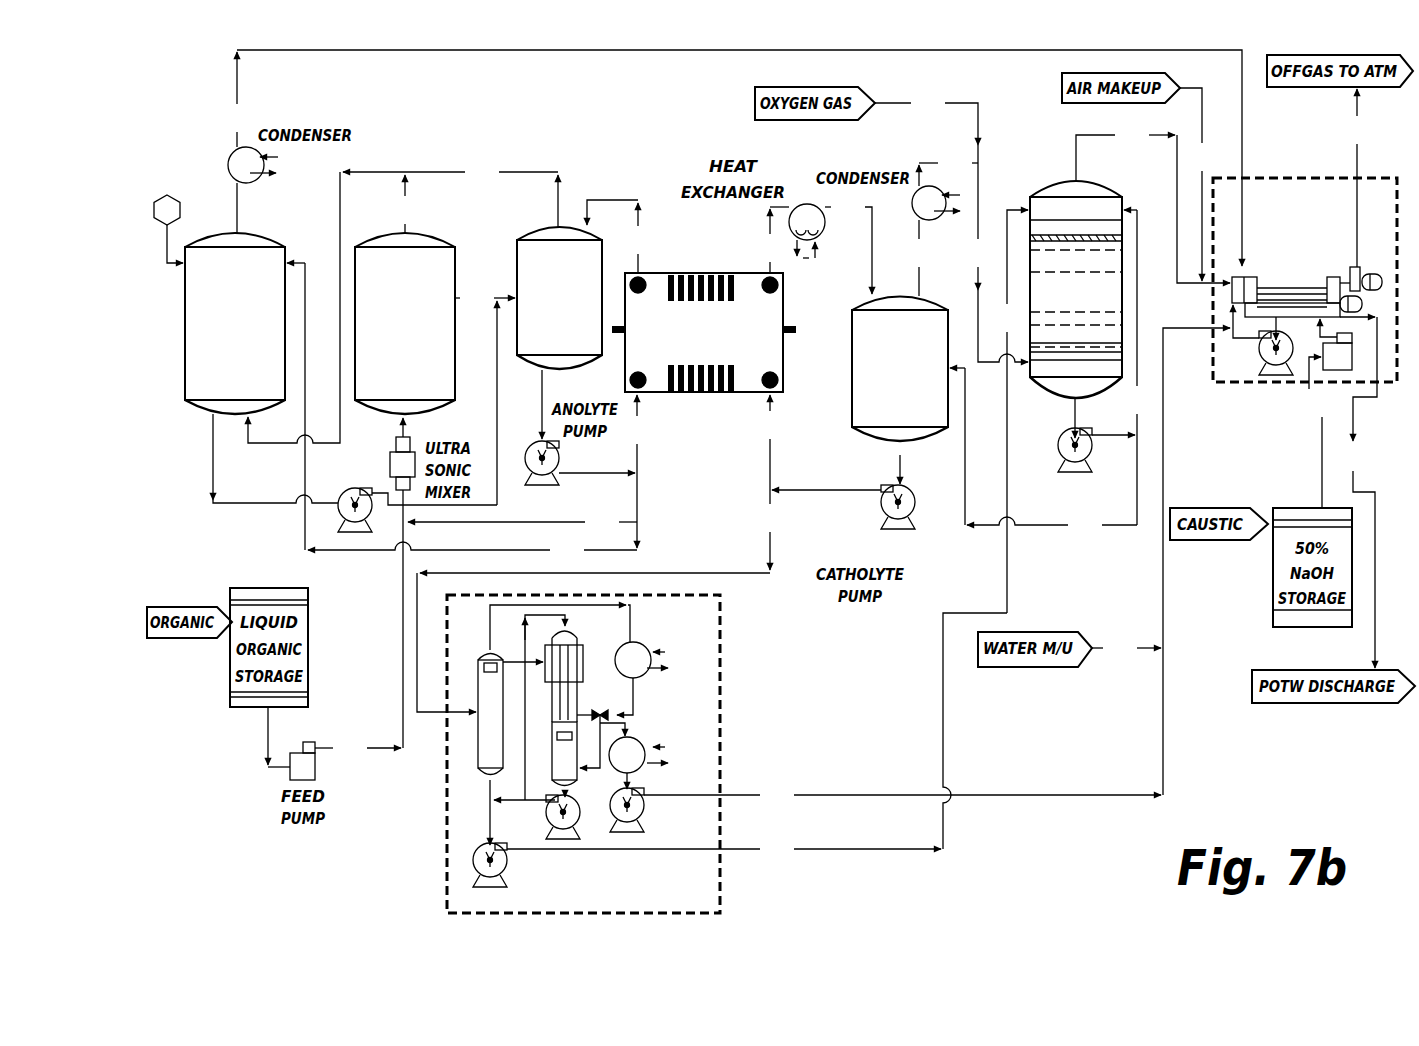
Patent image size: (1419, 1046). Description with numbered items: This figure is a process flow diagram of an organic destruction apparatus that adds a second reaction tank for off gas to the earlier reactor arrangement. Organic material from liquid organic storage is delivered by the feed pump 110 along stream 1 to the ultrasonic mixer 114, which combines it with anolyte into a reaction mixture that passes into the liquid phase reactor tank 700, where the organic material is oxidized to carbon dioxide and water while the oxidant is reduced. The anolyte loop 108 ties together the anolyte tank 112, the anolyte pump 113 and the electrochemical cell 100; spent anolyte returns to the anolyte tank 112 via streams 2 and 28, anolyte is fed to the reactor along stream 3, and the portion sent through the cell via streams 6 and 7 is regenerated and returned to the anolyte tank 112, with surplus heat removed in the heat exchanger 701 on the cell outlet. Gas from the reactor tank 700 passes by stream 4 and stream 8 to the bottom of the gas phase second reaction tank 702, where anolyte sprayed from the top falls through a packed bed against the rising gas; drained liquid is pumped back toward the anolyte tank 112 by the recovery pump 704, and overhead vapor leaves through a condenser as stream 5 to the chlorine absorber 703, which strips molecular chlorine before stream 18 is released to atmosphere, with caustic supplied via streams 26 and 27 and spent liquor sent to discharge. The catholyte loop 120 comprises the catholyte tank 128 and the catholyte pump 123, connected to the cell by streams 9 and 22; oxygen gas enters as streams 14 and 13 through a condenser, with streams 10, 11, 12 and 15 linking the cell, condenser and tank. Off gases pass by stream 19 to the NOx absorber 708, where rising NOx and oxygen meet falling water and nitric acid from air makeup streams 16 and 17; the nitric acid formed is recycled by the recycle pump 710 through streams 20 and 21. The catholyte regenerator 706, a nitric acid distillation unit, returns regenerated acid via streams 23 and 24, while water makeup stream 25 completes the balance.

The electrochemical cell 100 is at (688, 406).
The anolyte loop 108 is at (620, 184).
The feed pump 110 is at (318, 780).
The anolyte tank 112 is at (544, 340).
The anolyte pump 113 is at (541, 486).
The ultrasonic mixer 114 is at (388, 458).
The catholyte loop 120 is at (814, 194).
The catholyte pump 123 is at (890, 530).
The catholyte tank 128 is at (884, 411).
The reactor tank 700 is at (424, 388).
The heat exchanger 701 is at (815, 263).
The second reaction tank 702 is at (254, 388).
The chlorine absorber 703 is at (1298, 176).
The recovery pump 704 is at (346, 491).
The catholyte regenerator 706 is at (724, 660).
The NOx absorber 708 is at (1052, 398).
The recycle pump 710 is at (1064, 473).
The stream 1 is at (358, 748).
The stream 2 is at (522, 522).
The stream 3 is at (485, 298).
The stream 4 is at (405, 204).
The stream 5 is at (237, 125).
The stream 6 is at (637, 471).
The stream 7 is at (638, 238).
The stream 8 is at (511, 172).
The stream 9 is at (770, 449).
The stream 10 is at (770, 241).
The stream 11 is at (848, 243).
The stream 12 is at (919, 258).
The stream 13 is at (948, 163).
The stream 14 is at (926, 117).
The stream 15 is at (994, 253).
The stream 16 is at (1125, 151).
The stream 17 is at (1199, 184).
The stream 18 is at (1357, 178).
The stream 19 is at (1009, 411).
The stream 20 is at (1137, 367).
The stream 21 is at (1052, 525).
The stream 22 is at (603, 538).
The stream 23 is at (902, 795).
The stream 24 is at (757, 738).
The stream 25 is at (1126, 648).
The stream 26 is at (1312, 432).
The stream 27 is at (1356, 492).
The stream 28 is at (472, 550).